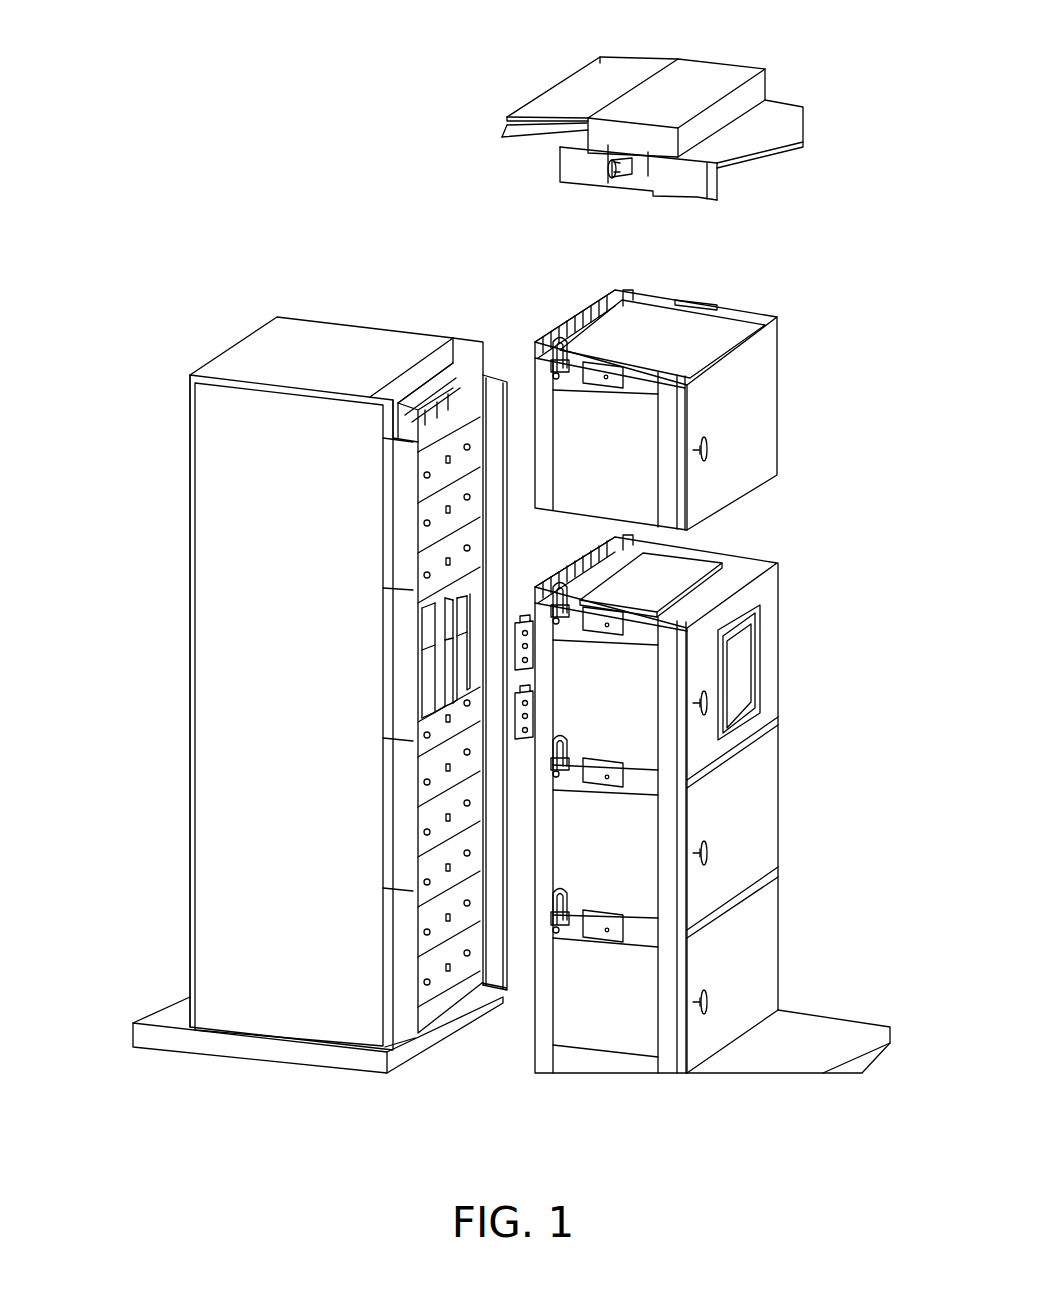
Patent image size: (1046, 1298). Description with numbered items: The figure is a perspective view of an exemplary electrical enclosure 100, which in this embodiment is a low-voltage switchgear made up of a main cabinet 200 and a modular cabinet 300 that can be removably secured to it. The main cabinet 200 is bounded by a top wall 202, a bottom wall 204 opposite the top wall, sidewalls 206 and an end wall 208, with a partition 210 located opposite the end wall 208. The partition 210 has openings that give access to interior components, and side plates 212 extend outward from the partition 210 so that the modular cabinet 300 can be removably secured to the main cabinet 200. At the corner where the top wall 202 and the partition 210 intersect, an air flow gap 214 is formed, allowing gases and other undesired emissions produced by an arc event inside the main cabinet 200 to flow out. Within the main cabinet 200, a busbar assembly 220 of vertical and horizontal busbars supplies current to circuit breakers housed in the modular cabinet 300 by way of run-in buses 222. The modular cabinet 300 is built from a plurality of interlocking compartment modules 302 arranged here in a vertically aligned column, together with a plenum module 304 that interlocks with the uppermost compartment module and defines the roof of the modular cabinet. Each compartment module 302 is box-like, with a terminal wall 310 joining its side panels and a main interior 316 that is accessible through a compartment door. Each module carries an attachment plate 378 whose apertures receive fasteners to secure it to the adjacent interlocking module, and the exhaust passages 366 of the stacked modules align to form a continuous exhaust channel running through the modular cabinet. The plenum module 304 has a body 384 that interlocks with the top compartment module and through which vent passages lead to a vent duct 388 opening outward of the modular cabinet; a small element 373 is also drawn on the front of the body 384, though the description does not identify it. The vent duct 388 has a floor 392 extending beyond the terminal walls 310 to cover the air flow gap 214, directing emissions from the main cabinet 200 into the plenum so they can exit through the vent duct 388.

The electrical enclosure 100 is at (235, 238).
The main cabinet 200 is at (180, 432).
The top wall 202 is at (298, 355).
The bottom wall 204 is at (278, 1042).
The sidewalls 206 is at (250, 838).
The end wall 208 is at (190, 723).
The partition 210 is at (455, 393).
The side plates 212 is at (493, 975).
The air flow gap 214 is at (438, 378).
The busbar assembly 220 is at (440, 655).
The run-in buses 222 is at (527, 724).
The modular cabinet 300 is at (833, 118).
The compartment modules 302 is at (818, 405).
The plenum module 304 is at (726, 80).
The terminal wall 310 is at (565, 300).
The main interior 316 is at (641, 359).
The exhaust passages 366 is at (645, 590).
The connector 373 is at (615, 183).
The attachment plate 378 is at (590, 370).
The body 384 is at (727, 170).
The vent duct 388 is at (605, 75).
The floor 392 is at (517, 143).